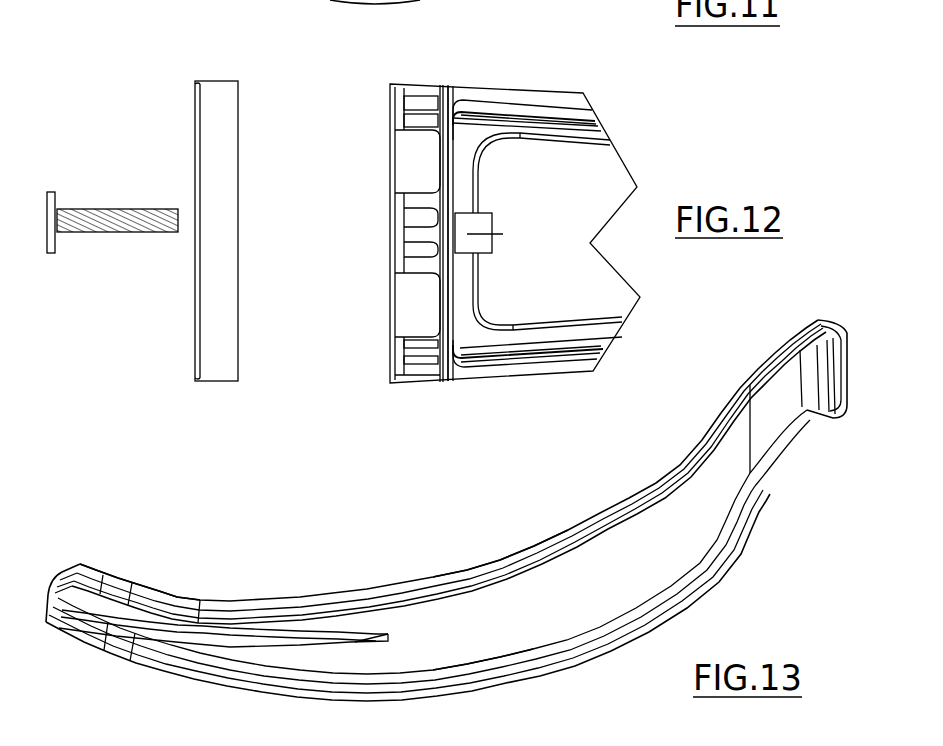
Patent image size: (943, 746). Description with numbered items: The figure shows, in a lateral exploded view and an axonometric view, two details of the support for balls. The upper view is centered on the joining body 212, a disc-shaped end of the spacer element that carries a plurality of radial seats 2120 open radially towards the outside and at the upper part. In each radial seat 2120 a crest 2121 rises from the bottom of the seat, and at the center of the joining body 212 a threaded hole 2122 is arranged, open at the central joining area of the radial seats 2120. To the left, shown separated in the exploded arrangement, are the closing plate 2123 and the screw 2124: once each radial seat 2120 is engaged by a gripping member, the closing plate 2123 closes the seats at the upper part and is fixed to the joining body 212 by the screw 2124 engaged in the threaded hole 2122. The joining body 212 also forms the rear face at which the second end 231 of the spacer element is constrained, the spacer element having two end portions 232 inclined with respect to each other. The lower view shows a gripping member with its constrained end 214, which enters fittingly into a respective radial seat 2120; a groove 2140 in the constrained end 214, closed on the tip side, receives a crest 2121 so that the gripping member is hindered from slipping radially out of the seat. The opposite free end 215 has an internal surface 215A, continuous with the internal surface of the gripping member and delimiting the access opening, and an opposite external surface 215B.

In FIG. 12, the joining body 212 is at (413, 153).
In FIG. 12, the radial seat 2120 is at (398, 108).
In FIG. 12, the crest 2121 is at (410, 113).
In FIG. 12, the threaded hole 2122 is at (505, 234).
In FIG. 12, the closing plate 2123 is at (200, 130).
In FIG. 12, the screw 2124 is at (95, 207).
In FIG. 12, the second end 231 is at (450, 303).
In FIG. 12, the end portions 232 is at (577, 345).
In FIG. 13, the constrained end 214 is at (97, 583).
In FIG. 13, the groove 2140 is at (53, 590).
In FIG. 13, the free end 215 is at (822, 317).
In FIG. 13, the internal surface 215A is at (510, 552).
In FIG. 13, the external surface 215B is at (585, 618).